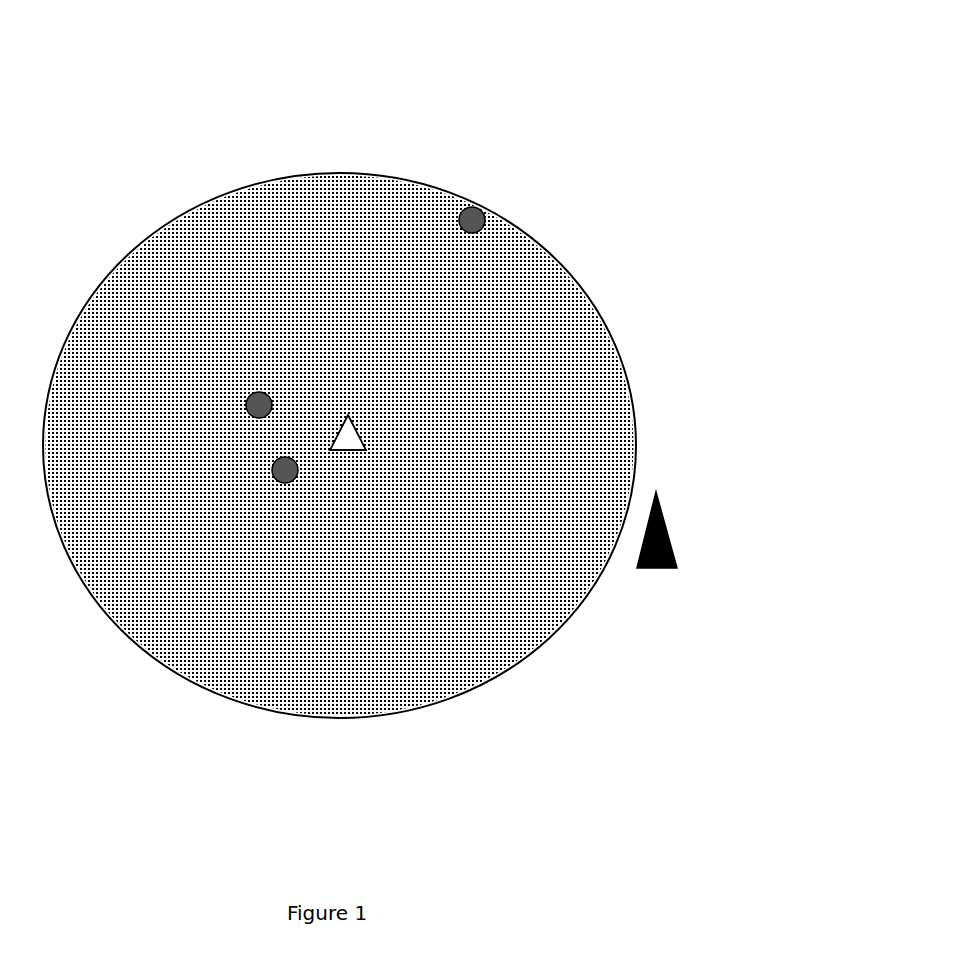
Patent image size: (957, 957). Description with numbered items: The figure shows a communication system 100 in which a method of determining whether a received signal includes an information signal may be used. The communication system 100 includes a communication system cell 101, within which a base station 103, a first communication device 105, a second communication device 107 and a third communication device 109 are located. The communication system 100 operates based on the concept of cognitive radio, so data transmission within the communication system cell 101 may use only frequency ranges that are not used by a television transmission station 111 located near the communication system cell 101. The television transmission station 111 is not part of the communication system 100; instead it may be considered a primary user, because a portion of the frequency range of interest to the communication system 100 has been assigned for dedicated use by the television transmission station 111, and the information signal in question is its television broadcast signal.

The communication system 100 is at (715, 110).
The communication system cell 101 is at (312, 173).
The base station 103 is at (368, 433).
The first communication device 105 is at (285, 483).
The second communication device 107 is at (259, 405).
The third communication device 109 is at (475, 207).
The TV transmission station 111 is at (674, 512).